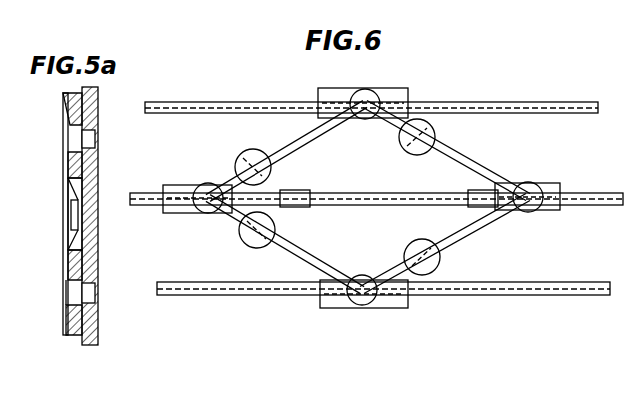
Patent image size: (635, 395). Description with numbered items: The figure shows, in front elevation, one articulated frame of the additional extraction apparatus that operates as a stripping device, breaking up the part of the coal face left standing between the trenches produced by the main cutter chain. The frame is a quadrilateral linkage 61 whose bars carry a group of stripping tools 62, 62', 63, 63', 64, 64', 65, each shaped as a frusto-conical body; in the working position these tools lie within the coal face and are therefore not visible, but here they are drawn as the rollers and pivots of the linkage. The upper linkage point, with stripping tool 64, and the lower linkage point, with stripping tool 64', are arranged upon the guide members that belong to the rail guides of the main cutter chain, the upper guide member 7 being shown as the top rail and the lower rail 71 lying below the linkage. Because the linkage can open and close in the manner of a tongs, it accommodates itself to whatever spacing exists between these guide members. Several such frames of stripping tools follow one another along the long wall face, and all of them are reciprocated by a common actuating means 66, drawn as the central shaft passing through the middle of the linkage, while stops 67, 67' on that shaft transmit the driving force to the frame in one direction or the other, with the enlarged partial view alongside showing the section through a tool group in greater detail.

In FIG. 6, the guide member 7 is at (203, 113).
In FIG. 6, the lower rail 71 is at (201, 296).
In FIG. 6, the quadrilateral linkage 61 is at (300, 152).
In FIG. 5a, the stripping tool 62 is at (51, 109).
In FIG. 6, the stripping tool 62 is at (435, 137).
In FIG. 6, the stripping tool 62' is at (439, 257).
In FIG. 5a, the stripping tool 63 is at (51, 214).
In FIG. 6, the stripping tool 63 is at (234, 167).
In FIG. 6, the stripping tool 63' is at (236, 236).
In FIG. 6, the stripping tool 64 is at (363, 94).
In FIG. 6, the stripping tool 64' is at (364, 303).
In FIG. 5a, the stripping tool 65 is at (67, 261).
In FIG. 6, the stripping tool 65 is at (545, 186).
In FIG. 6, the actuating means 66 is at (584, 206).
In FIG. 6, the stop 67 is at (461, 208).
In FIG. 6, the stop 67' is at (296, 210).